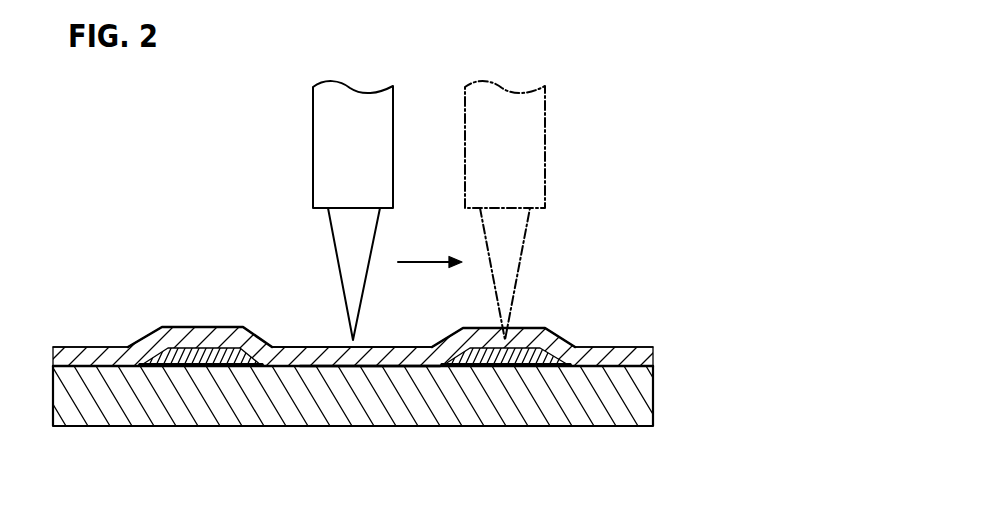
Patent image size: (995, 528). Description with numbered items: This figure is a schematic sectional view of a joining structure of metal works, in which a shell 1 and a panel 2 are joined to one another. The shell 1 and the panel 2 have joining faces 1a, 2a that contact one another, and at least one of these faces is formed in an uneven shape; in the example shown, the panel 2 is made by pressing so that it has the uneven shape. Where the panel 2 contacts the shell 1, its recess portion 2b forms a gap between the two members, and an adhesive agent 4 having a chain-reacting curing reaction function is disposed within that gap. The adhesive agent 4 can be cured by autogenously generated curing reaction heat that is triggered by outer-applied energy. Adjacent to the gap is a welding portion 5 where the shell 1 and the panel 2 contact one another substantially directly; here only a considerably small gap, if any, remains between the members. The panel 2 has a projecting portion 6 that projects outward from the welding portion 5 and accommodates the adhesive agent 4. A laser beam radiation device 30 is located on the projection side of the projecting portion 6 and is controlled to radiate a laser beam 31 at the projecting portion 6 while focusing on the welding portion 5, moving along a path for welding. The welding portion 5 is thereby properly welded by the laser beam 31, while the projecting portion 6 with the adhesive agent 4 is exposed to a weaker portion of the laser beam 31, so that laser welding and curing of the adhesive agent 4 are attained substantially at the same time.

The shell 1 is at (645, 398).
The joining face of the shell 1a is at (297, 338).
The panel 2 is at (638, 352).
The joining face of the panel 2a is at (372, 376).
The recess portion 2b is at (243, 366).
The adhesive agent 4 is at (200, 365).
The welding portion 5 is at (75, 363).
The projecting portion 6 is at (210, 327).
The laser beam radiation device 30 is at (302, 108).
The laser beam 31 is at (330, 232).